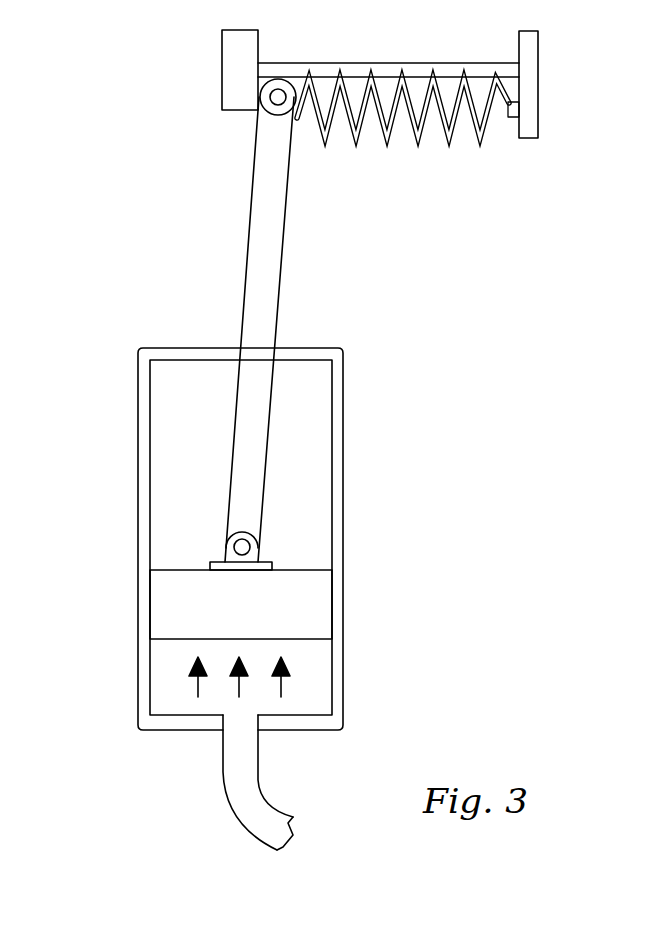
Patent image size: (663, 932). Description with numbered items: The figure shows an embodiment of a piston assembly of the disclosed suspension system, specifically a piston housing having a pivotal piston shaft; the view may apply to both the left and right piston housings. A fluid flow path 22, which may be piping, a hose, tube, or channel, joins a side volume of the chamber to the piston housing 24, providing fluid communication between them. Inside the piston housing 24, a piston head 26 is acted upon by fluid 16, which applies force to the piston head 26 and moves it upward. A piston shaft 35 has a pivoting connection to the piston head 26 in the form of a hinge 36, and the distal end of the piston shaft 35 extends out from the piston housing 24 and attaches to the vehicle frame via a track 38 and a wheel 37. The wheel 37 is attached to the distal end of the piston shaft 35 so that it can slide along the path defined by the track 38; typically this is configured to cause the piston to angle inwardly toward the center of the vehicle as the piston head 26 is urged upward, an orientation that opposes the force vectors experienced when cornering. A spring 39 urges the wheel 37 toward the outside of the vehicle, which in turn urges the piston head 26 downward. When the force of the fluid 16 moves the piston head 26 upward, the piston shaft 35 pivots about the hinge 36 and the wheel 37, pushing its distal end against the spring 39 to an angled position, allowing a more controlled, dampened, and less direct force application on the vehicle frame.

The fluid 16 is at (165, 685).
The left fluid flow path 22 is at (237, 772).
The left piston housing 24 is at (145, 418).
The piston head 26 is at (170, 612).
The piston shaft 35 is at (260, 297).
The hinge 36 is at (237, 543).
The wheel 37 is at (272, 103).
The track 38 is at (283, 73).
The spring 39 is at (387, 135).